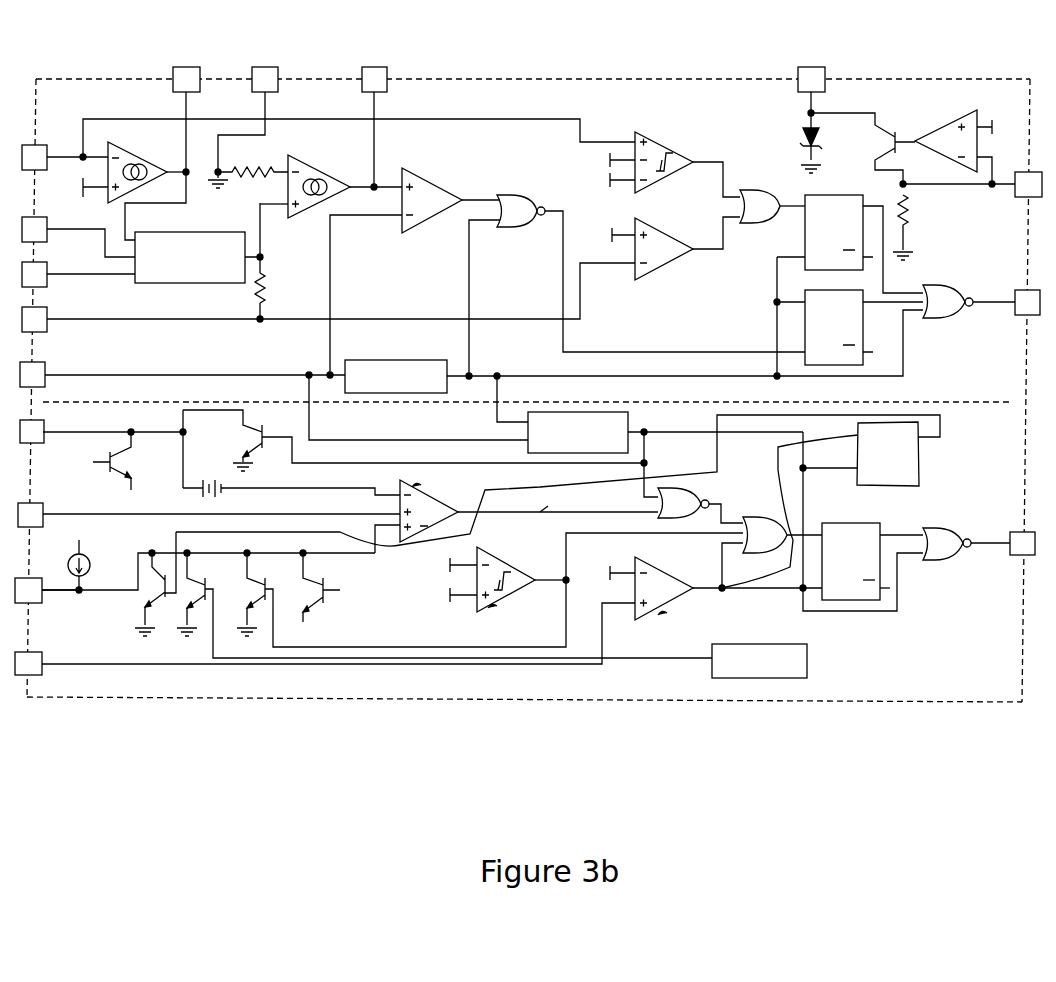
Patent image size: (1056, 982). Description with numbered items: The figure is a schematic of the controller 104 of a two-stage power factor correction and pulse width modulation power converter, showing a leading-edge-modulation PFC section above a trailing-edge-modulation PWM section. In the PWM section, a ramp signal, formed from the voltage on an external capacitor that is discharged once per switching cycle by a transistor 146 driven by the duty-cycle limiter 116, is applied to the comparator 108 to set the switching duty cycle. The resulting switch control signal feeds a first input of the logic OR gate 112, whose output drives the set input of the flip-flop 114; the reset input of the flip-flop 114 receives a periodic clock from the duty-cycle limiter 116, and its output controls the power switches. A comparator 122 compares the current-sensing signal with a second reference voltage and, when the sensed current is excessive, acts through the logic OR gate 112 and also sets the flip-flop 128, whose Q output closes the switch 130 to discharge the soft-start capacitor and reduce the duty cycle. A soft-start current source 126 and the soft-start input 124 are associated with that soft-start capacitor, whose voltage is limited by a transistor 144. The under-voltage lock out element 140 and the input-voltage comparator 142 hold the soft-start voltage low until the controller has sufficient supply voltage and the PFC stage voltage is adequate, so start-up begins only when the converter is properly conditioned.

The controller 104 is at (567, 78).
The comparator 108 is at (529, 511).
The logic OR gate 112 is at (745, 517).
The flip-flop 114 is at (851, 523).
The duty-cycle limiter 116 is at (631, 424).
The comparator 122 is at (645, 553).
The soft start pin ISOFT 124 is at (54, 564).
The 50 microamp current source 126 is at (91, 556).
The flip-flop 128 is at (921, 462).
The switch 130 is at (135, 594).
The under-voltage lock out element 140 is at (812, 661).
The comparator 142 is at (484, 617).
The transistor 144 is at (344, 578).
The transistor 146 is at (413, 449).